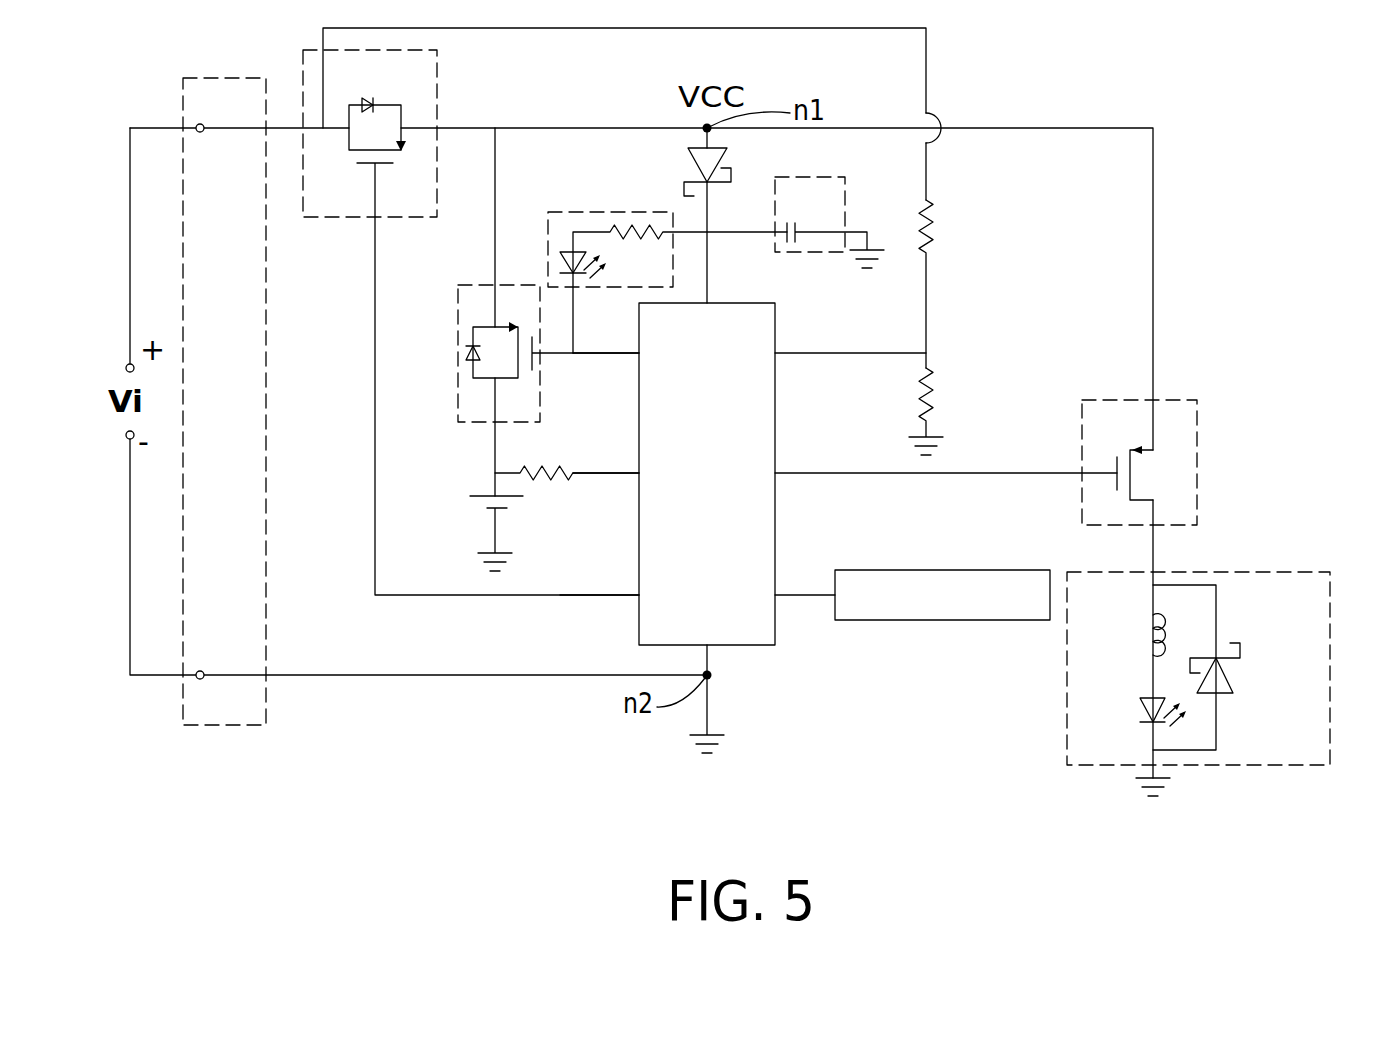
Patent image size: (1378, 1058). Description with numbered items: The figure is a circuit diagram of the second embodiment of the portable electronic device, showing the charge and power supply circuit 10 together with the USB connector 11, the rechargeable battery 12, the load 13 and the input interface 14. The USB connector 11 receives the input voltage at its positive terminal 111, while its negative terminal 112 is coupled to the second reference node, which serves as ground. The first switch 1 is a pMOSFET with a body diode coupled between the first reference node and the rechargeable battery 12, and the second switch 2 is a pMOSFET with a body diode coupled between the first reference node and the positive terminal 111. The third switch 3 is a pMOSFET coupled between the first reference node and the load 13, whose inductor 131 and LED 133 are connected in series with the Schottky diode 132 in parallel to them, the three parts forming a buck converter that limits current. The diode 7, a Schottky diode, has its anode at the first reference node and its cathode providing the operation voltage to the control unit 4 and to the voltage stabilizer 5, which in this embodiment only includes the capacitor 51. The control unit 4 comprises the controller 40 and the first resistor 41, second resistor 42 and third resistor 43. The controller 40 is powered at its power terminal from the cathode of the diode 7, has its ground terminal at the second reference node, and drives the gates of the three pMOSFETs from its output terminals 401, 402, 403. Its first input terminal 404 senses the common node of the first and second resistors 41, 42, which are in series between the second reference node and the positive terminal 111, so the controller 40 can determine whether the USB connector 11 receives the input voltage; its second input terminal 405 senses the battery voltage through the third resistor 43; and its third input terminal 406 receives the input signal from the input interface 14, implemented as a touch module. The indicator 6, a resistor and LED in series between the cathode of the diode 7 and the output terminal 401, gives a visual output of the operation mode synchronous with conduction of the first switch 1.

The charge and power supply circuit 10 is at (1096, 114).
The USB connector 11 is at (237, 77).
The positive terminal 111 is at (210, 133).
The negative terminal 112 is at (215, 672).
The rechargeable battery 12 is at (490, 503).
The load 13 is at (1303, 570).
The inductor 131 is at (1140, 632).
The Schottky diode 132 is at (1237, 673).
The LED 133 is at (1140, 712).
The input interface 14 is at (1020, 570).
The first switch 1 is at (485, 280).
The second switch 2 is at (440, 78).
The third switch 3 is at (1175, 398).
The control unit 4 is at (838, 520).
The controller 40 is at (777, 395).
The output terminal 401 is at (618, 352).
The output terminal 402 is at (618, 595).
The output terminal 403 is at (796, 473).
The first input terminal 404 is at (796, 352).
The second input terminal 405 is at (618, 473).
The third input terminal 406 is at (796, 595).
The first resistor 41 is at (932, 390).
The second resistor 42 is at (932, 228).
The third resistor 43 is at (545, 483).
The voltage stabilizer 5 is at (845, 181).
The capacitor 51 is at (790, 223).
The indicator 6 is at (578, 208).
The diode 7 is at (688, 168).